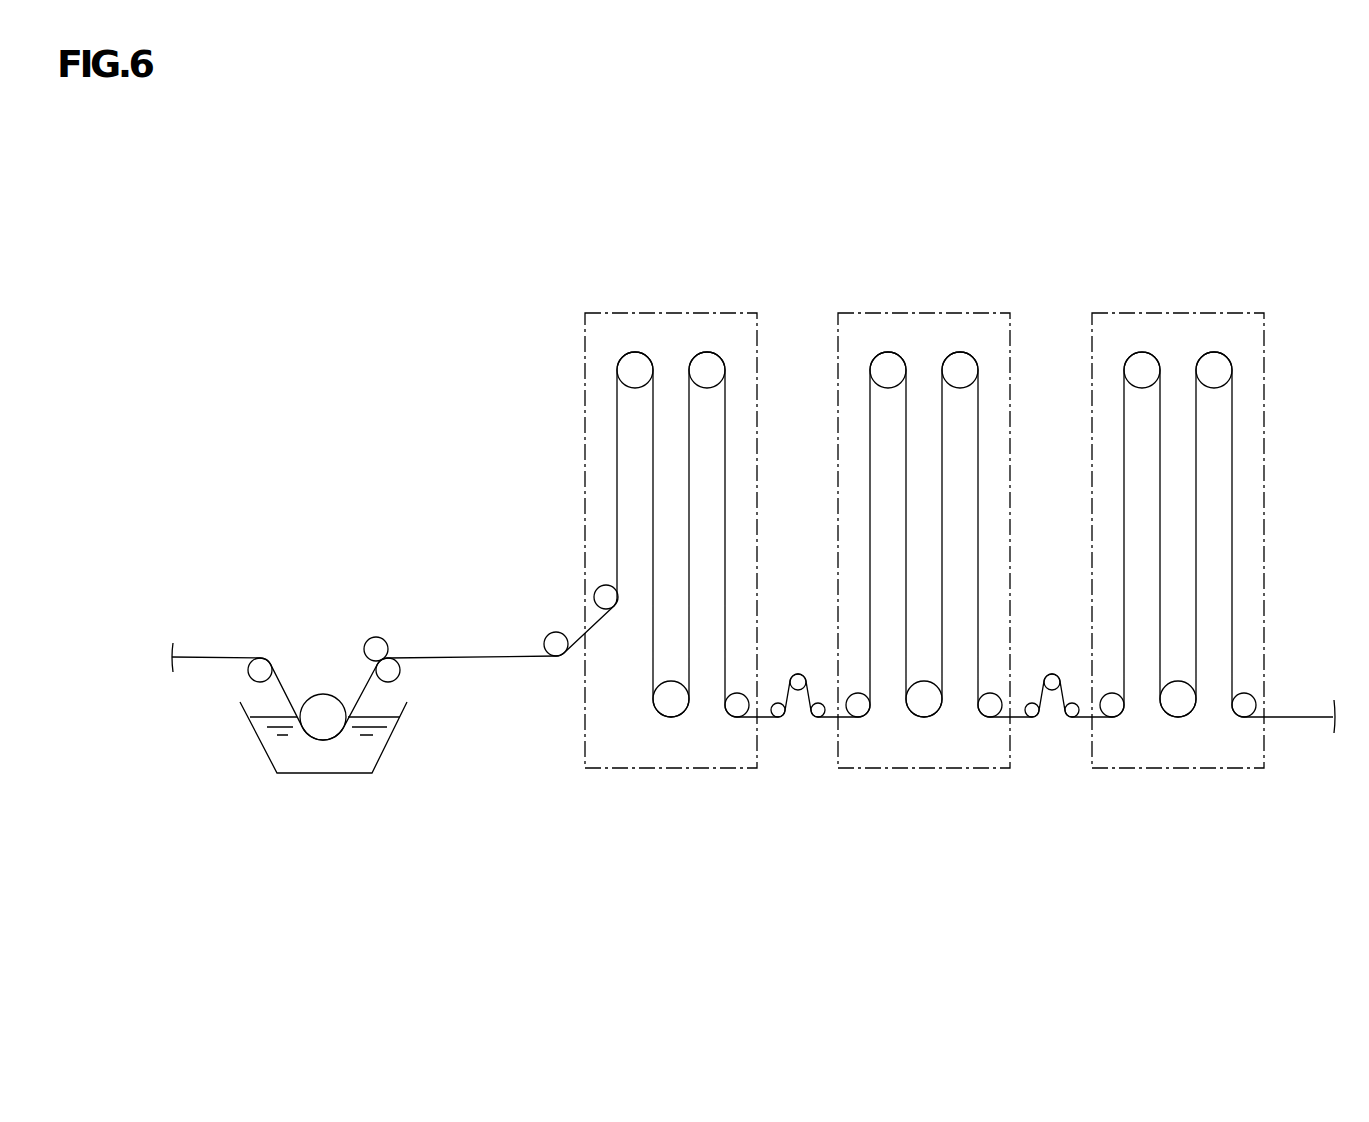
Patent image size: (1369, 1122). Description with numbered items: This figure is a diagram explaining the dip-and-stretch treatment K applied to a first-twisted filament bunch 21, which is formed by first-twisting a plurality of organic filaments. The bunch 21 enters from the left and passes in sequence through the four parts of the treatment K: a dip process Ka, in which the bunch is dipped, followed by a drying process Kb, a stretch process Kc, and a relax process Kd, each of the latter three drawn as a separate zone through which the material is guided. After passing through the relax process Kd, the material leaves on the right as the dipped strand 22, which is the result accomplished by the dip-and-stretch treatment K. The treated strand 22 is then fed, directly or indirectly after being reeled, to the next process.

The dip-and-stretch treatment K is at (308, 432).
The dip process Ka is at (317, 628).
The drying process Kb is at (670, 313).
The stretch process Kc is at (922, 313).
The relax process Kd is at (1178, 313).
The bunch 21 is at (198, 650).
The strand 22 is at (1310, 717).